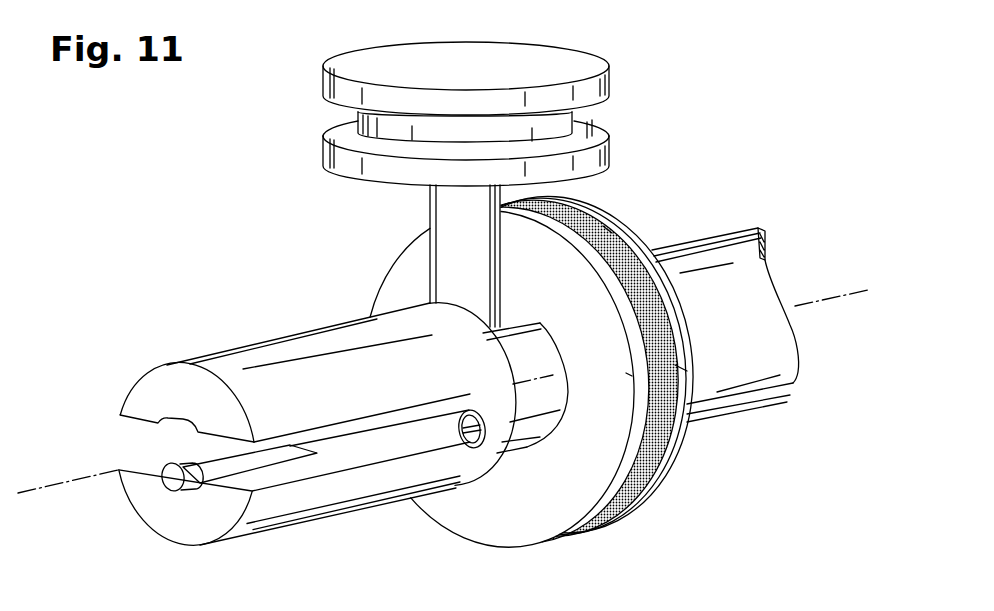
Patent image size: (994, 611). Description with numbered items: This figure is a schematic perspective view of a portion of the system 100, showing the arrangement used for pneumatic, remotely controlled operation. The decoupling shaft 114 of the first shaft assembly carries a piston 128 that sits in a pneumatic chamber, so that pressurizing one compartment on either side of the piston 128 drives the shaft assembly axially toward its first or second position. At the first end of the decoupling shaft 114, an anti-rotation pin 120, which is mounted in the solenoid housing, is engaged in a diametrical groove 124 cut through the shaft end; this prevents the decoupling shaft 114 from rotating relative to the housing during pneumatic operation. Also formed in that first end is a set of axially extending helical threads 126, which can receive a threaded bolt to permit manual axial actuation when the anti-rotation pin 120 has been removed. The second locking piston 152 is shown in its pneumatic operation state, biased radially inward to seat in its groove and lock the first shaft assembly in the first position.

The system 100 is at (156, 233).
The decoupling shaft 114 is at (713, 257).
The anti-rotation pin 120 is at (412, 417).
The diametrical groove 124 is at (112, 428).
The helical threads 126 is at (168, 480).
The piston 128 is at (408, 267).
The second locking piston 152 is at (567, 62).